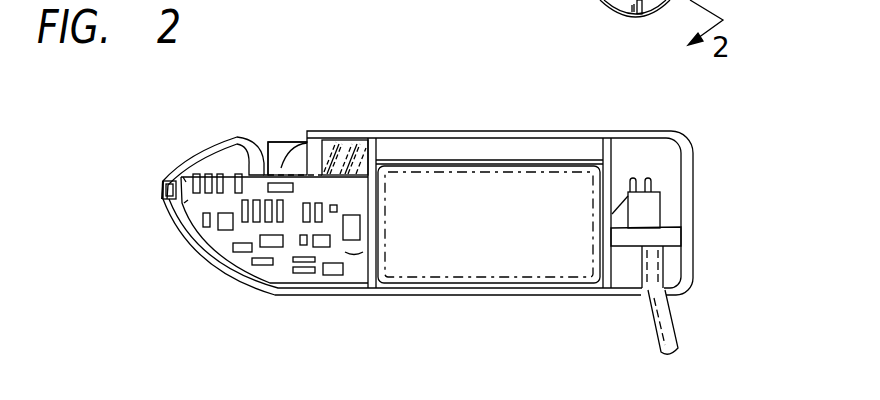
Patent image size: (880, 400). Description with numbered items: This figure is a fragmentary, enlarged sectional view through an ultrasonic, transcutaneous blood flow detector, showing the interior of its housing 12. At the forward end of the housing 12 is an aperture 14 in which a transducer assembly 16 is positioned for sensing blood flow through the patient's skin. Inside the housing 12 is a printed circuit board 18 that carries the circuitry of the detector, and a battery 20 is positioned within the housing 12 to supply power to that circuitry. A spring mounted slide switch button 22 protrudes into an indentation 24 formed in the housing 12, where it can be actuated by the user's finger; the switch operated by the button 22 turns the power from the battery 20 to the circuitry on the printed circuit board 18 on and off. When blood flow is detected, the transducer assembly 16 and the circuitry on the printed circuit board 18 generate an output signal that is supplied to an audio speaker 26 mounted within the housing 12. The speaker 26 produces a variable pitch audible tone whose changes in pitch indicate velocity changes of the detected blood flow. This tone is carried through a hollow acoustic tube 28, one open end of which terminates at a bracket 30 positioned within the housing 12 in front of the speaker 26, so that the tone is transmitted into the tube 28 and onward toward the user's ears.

The housing 12 is at (495, 131).
The aperture 14 is at (163, 187).
The transducer assembly 16 is at (170, 197).
The printed circuit board 18 is at (220, 242).
The battery 20 is at (490, 240).
The slide switch button 22 is at (282, 145).
The indentation 24 is at (240, 141).
The audio speaker 26 is at (652, 210).
The hollow acoustic tube 28 is at (668, 323).
The bracket 30 is at (667, 233).